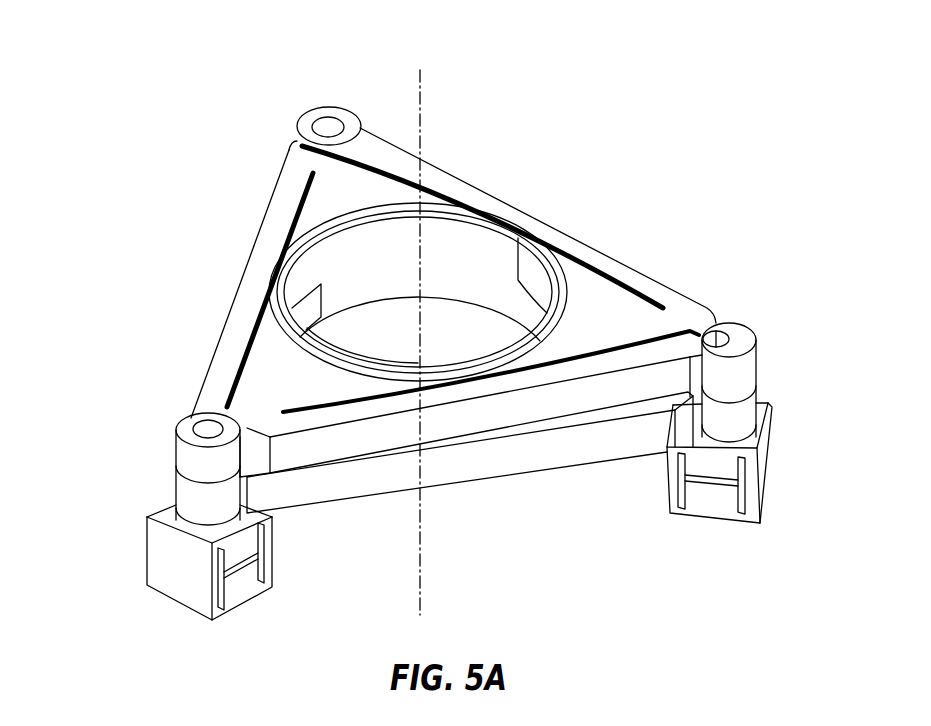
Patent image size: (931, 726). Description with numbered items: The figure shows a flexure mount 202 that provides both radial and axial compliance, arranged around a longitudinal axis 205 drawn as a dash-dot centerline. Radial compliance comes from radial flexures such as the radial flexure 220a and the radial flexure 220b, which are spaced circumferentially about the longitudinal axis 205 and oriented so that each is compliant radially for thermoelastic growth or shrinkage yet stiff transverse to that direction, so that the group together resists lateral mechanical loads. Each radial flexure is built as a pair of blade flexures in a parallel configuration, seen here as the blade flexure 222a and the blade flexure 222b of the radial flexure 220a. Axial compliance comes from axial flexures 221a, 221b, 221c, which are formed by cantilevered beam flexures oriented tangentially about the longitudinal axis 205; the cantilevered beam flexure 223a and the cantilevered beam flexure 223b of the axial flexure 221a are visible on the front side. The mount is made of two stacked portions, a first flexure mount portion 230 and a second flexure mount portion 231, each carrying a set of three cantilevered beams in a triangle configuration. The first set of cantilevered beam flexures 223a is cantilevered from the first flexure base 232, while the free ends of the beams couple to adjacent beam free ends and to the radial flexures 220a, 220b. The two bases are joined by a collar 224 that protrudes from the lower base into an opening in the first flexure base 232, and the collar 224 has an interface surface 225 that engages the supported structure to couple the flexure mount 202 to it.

The flexure mount 202 is at (227, 33).
The longitudinal axis 205 is at (432, 124).
The radial flexure 220a is at (191, 528).
The radial flexure 220b is at (788, 447).
The axial flexure 221a is at (476, 502).
The axial flexure 221b is at (551, 206).
The axial flexure 221c is at (219, 287).
The blade flexure 222a is at (187, 570).
The blade flexure 222b is at (270, 552).
The cantilevered beam flexure 223a is at (497, 412).
The cantilevered beam flexure 223b is at (572, 448).
The collar 224 is at (300, 332).
The interface surface 225 is at (478, 243).
The first flexure mount portion 230 is at (246, 179).
The second flexure mount portion 231 is at (408, 528).
The first flexure base 232 is at (593, 310).